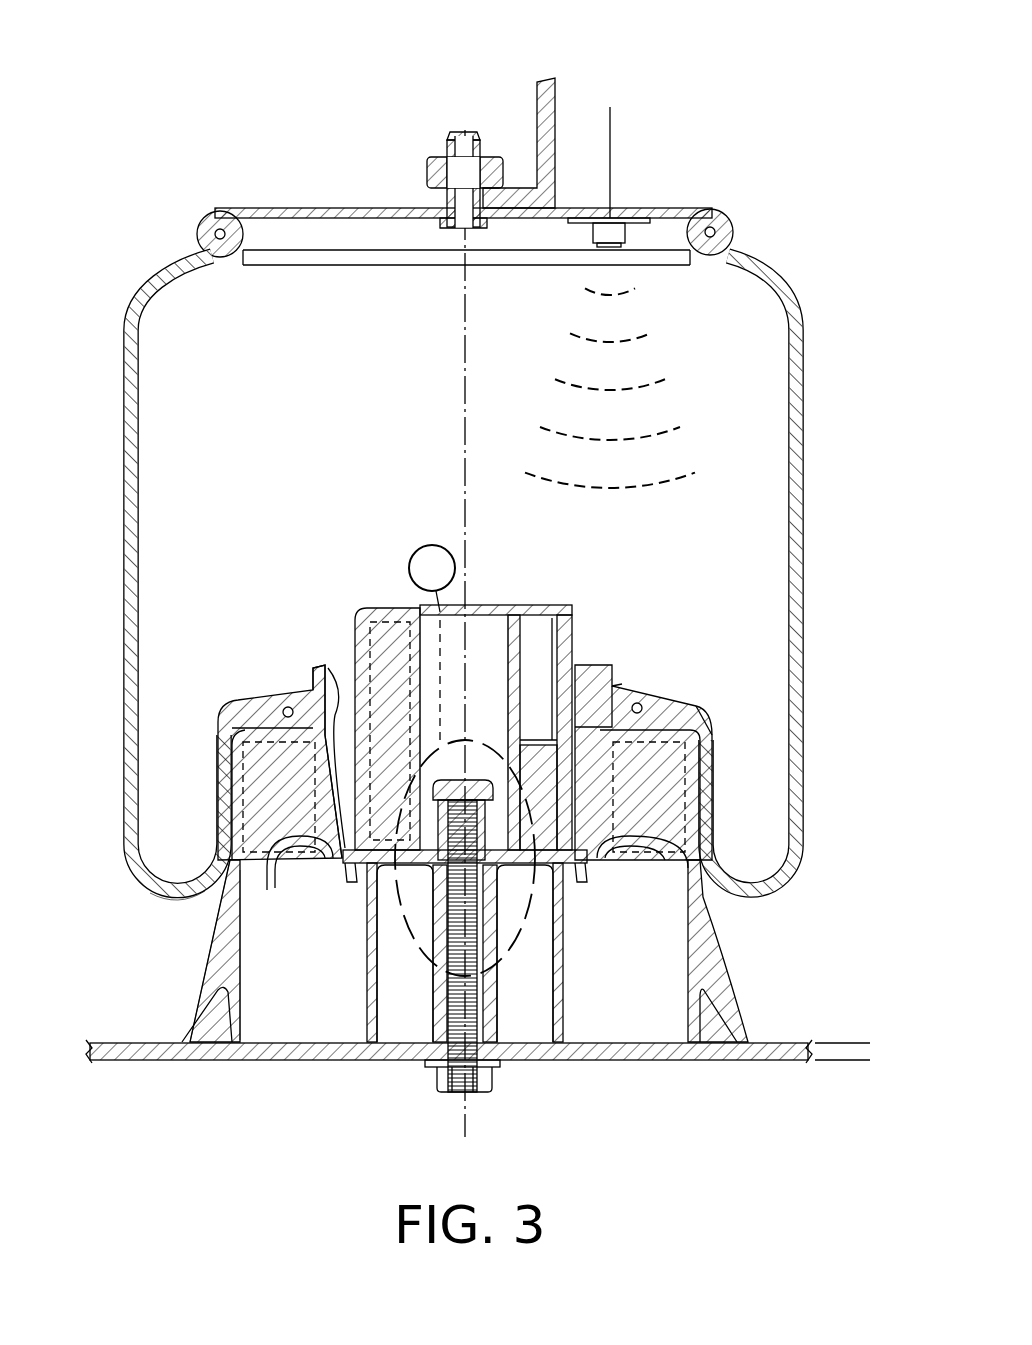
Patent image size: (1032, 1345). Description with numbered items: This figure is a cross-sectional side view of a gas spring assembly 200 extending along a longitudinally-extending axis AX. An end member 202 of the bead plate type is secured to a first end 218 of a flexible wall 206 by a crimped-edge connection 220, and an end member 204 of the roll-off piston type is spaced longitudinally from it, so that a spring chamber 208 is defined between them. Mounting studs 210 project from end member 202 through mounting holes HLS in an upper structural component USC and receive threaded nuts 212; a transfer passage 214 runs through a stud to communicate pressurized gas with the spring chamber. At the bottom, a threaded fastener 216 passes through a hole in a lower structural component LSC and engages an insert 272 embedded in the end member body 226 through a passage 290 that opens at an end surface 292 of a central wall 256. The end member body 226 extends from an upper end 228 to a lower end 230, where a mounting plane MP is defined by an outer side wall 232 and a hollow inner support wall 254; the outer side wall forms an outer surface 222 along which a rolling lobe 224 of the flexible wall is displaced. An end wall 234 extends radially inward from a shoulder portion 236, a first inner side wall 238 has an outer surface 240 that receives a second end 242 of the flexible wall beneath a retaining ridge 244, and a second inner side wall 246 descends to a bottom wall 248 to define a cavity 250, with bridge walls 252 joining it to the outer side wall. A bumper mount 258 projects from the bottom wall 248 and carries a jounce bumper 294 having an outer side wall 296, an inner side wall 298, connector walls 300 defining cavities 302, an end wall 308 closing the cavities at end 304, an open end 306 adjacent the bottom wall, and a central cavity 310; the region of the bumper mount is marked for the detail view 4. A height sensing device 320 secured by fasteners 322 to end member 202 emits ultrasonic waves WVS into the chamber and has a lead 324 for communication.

The gas spring assembly 200 is at (797, 243).
The end member 202 is at (254, 205).
The end member 204 is at (736, 948).
The flexible wall 206 is at (806, 490).
The spring chamber 208 is at (180, 438).
The mounting studs 210 is at (448, 140).
The threaded nuts 212 is at (428, 166).
The transfer passage 214 is at (464, 126).
The threaded fastener 216 is at (440, 1085).
The first end 218 is at (240, 270).
The crimped-edge connection 220 is at (197, 233).
The outer surface 222 is at (190, 1015).
The rolling lobe 224 is at (213, 888).
The end member body 226 is at (220, 950).
The upper end 228 is at (736, 690).
The lower end 230 is at (752, 1013).
The outer side wall 232 is at (215, 975).
The end wall 234 is at (272, 720).
The shoulder portion 236 is at (240, 745).
The first inner side wall 238 is at (330, 705).
The outer surface 240 is at (615, 690).
The second end 242 is at (700, 700).
The retaining ridge 244 is at (612, 690).
The second inner side wall 246 is at (320, 775).
The bottom wall 248 is at (367, 900).
The cavity 250 is at (590, 690).
The bridge walls 252 is at (250, 756).
The inner support wall 254 is at (375, 965).
The central wall 256 is at (435, 1000).
The bumper mount 258 is at (570, 787).
The insert 272 is at (485, 797).
The passage 290 is at (480, 975).
The end surface 292 is at (556, 1030).
The jounce bumper 294 is at (373, 604).
The outer side wall 296 is at (545, 815).
The inner side wall 298 is at (603, 752).
The connector walls 300 is at (345, 690).
The cavities 302 is at (688, 722).
The end 304 is at (519, 604).
The end 306 is at (333, 848).
The end wall 308 is at (549, 640).
The central cavity 310 is at (478, 634).
The height sensing device 320 is at (590, 233).
The fasteners 322 is at (638, 226).
The lead 324 is at (613, 128).
The detail view indicator FIG. 4 is at (465, 760).
The upper structural component USC is at (557, 128).
The lower structural component LSC is at (165, 1062).
The mounting plane MP is at (866, 1062).
The mounting holes HLS is at (440, 222).
The ultrasonic waves WVS is at (682, 352).
The longitudinally-extending axis AX is at (466, 1120).